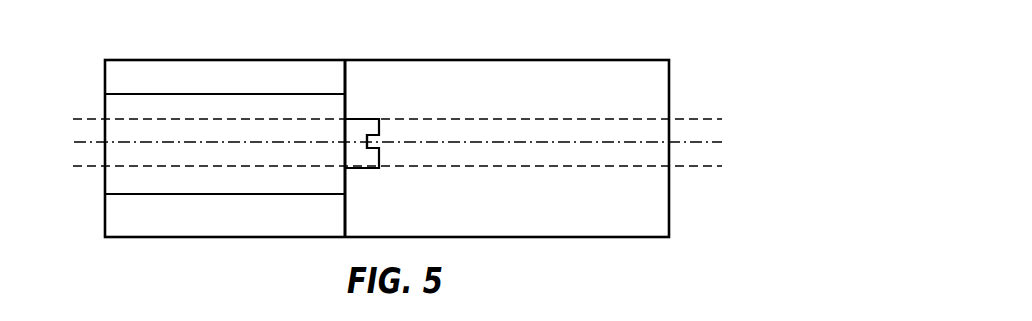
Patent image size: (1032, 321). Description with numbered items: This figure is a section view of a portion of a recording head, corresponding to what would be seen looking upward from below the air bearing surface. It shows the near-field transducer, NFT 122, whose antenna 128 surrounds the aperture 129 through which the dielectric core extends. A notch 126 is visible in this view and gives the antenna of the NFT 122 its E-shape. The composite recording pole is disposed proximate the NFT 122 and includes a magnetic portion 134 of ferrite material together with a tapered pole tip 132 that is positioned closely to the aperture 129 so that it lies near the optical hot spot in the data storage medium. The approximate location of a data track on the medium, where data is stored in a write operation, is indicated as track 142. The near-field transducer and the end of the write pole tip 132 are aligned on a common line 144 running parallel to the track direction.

The NFT 122 is at (628, 53).
The notch 126 is at (377, 145).
The antenna 128 is at (527, 99).
The aperture 129 is at (367, 157).
The pole tip 132 is at (338, 127).
The magnetic portion 134 is at (107, 158).
The data track location 142 is at (68, 117).
The common line 144 is at (137, 138).